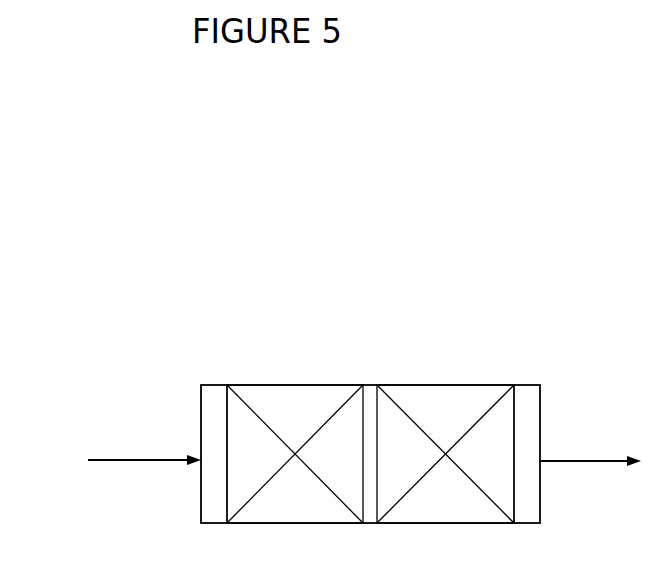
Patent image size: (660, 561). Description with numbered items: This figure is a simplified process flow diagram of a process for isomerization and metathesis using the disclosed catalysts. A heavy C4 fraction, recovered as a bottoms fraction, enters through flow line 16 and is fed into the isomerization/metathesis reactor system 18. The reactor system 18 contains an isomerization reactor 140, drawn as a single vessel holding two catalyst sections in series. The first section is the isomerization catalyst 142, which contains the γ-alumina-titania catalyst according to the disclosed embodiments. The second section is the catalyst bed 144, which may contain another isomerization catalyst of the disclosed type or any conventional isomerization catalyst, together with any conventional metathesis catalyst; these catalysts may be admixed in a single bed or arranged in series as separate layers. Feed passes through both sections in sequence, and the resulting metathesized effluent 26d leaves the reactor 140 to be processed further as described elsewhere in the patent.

The isomerization/metathesis reactor system 18 is at (120, 285).
The isomerization reactor 140 is at (205, 380).
The isomerization catalyst 142 is at (317, 380).
The catalyst bed 144 is at (465, 380).
The flow line 16 is at (105, 452).
The metathesized effluent 26d is at (603, 456).